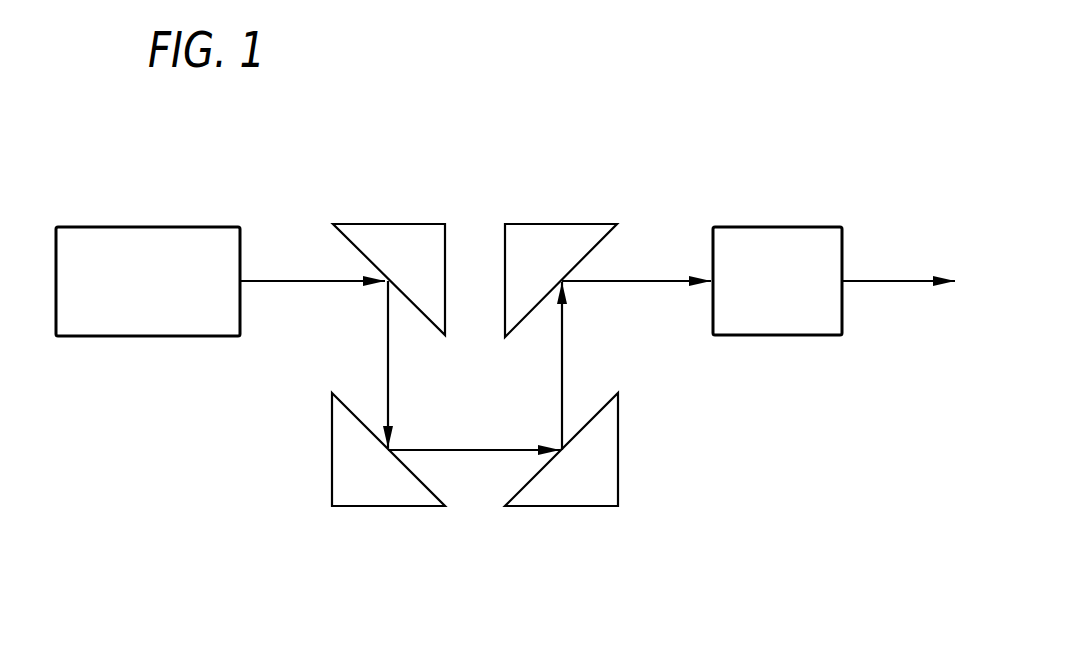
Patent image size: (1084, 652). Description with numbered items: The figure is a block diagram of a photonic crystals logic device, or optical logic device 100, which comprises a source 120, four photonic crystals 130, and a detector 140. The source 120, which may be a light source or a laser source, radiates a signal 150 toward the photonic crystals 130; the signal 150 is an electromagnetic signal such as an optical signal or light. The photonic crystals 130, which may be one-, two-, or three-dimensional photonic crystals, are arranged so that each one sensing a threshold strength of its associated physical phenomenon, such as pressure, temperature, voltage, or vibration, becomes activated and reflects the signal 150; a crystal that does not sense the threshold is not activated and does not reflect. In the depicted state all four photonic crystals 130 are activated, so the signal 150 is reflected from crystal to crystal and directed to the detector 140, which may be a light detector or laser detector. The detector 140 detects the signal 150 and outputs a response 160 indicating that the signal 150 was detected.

The optical logic device 100 is at (740, 128).
The source 120 is at (130, 227).
The photonic crystals 130 is at (388, 224).
The detector 140 is at (777, 227).
The signal 150 is at (337, 282).
The response 160 is at (892, 281).